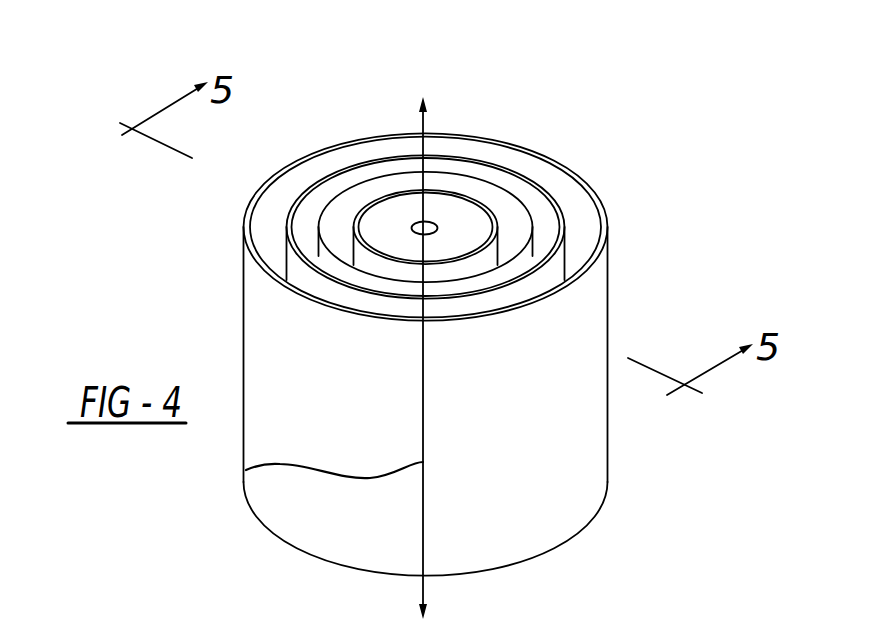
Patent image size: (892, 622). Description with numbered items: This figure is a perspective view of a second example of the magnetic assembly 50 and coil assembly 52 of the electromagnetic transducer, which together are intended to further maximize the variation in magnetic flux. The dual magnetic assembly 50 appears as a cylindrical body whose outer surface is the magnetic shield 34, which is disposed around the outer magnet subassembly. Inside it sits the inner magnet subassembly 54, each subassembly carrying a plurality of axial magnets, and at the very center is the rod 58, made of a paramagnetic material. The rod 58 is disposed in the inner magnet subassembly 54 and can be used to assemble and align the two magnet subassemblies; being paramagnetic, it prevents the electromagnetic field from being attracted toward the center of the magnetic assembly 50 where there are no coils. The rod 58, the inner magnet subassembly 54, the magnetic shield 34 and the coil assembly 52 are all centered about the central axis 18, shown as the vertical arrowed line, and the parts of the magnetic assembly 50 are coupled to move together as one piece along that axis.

The central axis 18 is at (246, 470).
The magnetic shield 34 is at (582, 437).
The magnetic assembly 50 is at (382, 222).
The coil assembly 52 is at (513, 234).
The inner magnet subassembly 54 is at (468, 222).
The rod 58 is at (430, 224).